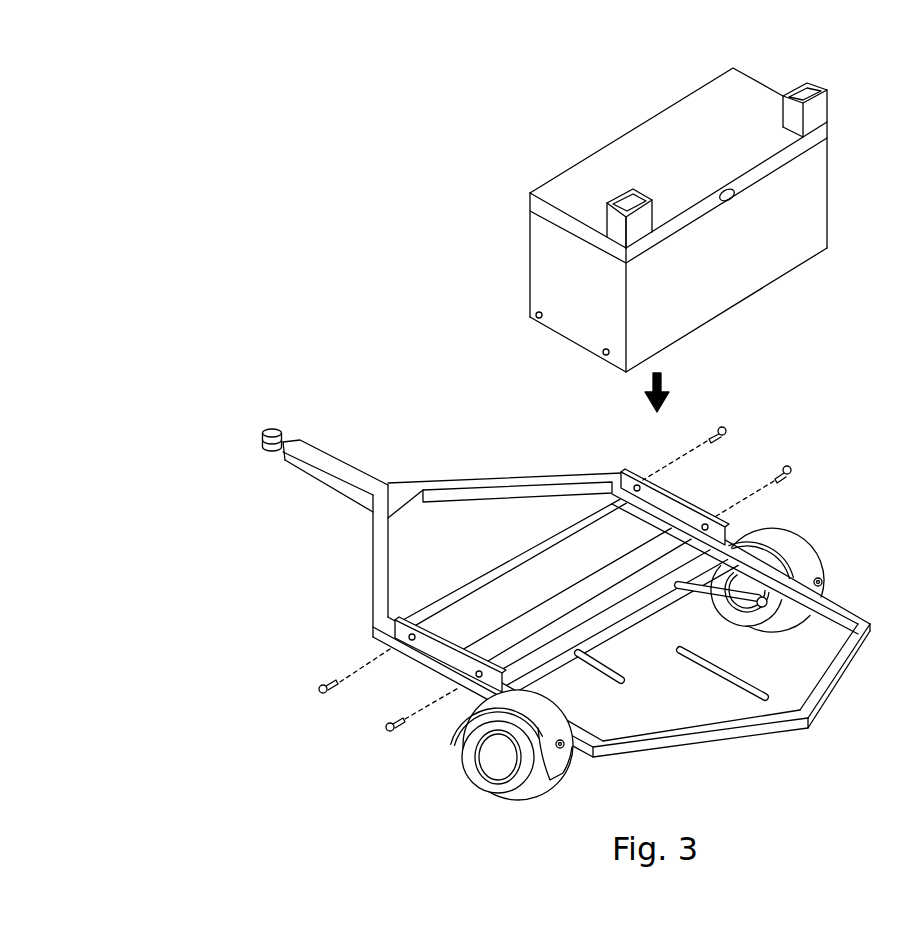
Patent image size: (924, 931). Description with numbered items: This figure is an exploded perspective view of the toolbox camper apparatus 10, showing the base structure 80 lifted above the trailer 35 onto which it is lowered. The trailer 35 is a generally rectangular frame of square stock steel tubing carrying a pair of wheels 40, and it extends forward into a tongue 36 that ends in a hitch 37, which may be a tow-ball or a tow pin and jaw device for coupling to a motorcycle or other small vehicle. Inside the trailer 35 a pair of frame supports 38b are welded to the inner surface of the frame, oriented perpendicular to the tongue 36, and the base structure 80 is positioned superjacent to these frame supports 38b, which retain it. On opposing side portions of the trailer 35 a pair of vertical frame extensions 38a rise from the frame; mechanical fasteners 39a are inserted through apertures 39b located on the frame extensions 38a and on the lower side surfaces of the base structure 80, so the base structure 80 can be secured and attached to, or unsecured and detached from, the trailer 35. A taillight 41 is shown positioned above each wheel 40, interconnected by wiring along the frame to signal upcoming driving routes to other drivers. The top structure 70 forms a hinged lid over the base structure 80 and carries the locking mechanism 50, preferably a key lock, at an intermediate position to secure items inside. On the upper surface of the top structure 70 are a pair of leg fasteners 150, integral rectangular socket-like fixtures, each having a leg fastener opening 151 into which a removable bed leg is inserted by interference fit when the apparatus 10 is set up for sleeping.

The toolbox camper apparatus 10 is at (177, 152).
The trailer 35 is at (490, 481).
The tongue 36 is at (327, 463).
The hitch 37 is at (272, 430).
The vertical frame extensions 38a is at (443, 652).
The frame supports 38b is at (523, 667).
The mechanical fasteners 39a is at (790, 466).
The apertures 39b is at (603, 352).
The wheels 40 is at (773, 627).
The taillights 41 is at (830, 575).
The locking mechanism 50 is at (736, 199).
The top structure 70 is at (702, 100).
The base structure 80 is at (535, 237).
The leg fasteners 150 is at (618, 223).
The leg fastener opening 151 is at (622, 197).